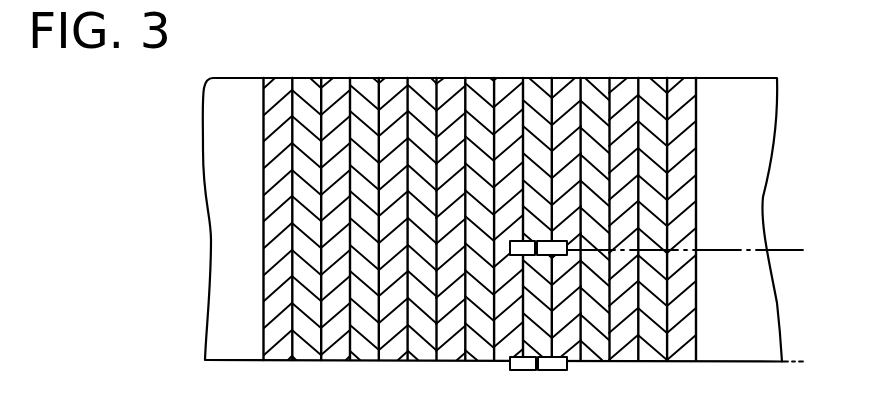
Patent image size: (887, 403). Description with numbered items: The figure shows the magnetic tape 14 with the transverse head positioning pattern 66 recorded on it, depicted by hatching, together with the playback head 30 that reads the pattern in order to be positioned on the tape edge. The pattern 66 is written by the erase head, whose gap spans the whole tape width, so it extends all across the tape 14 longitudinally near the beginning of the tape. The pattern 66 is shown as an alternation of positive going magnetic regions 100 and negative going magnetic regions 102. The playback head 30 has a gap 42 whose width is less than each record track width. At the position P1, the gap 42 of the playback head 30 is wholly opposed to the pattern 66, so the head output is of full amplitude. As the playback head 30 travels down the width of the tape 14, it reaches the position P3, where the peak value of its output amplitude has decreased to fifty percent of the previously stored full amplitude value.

The magnetic tape 14 is at (758, 205).
The transverse head positioning pattern 66 is at (595, 64).
The positive going magnetic regions 100 is at (337, 77).
The negative going magnetic regions 102 is at (419, 78).
The playback head 30 is at (562, 256).
The gap 42 is at (529, 370).
The position P1 is at (704, 253).
The position P3 is at (809, 363).